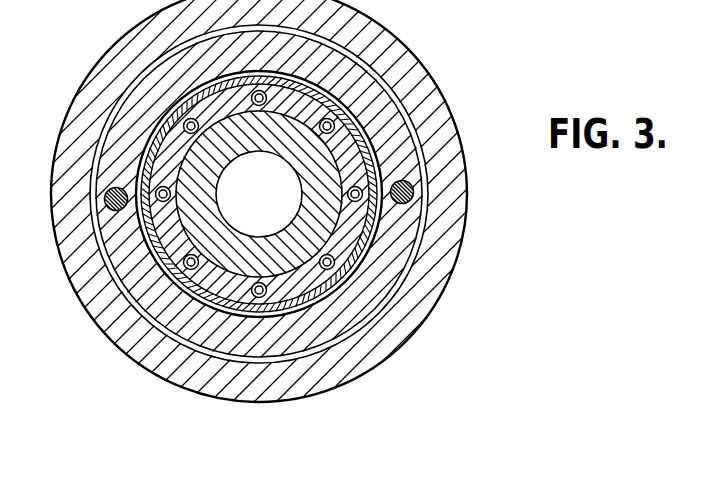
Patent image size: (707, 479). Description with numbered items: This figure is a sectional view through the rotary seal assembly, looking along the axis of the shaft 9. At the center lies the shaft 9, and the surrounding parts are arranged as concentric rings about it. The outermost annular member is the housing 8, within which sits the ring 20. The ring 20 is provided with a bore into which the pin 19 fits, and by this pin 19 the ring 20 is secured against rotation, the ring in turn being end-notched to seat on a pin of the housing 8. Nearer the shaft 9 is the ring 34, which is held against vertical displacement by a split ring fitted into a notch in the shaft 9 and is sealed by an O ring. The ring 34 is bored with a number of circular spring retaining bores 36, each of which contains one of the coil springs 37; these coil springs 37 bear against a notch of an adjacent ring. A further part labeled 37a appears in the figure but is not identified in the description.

The housing 8 is at (350, 17).
The ring 20 is at (340, 68).
The pin 19 is at (414, 193).
The flange lip 37a is at (382, 225).
The ring 34 is at (150, 150).
The coil springs 37 is at (322, 252).
The shaft 9 is at (207, 198).
The spring retaining bores 36 is at (183, 270).